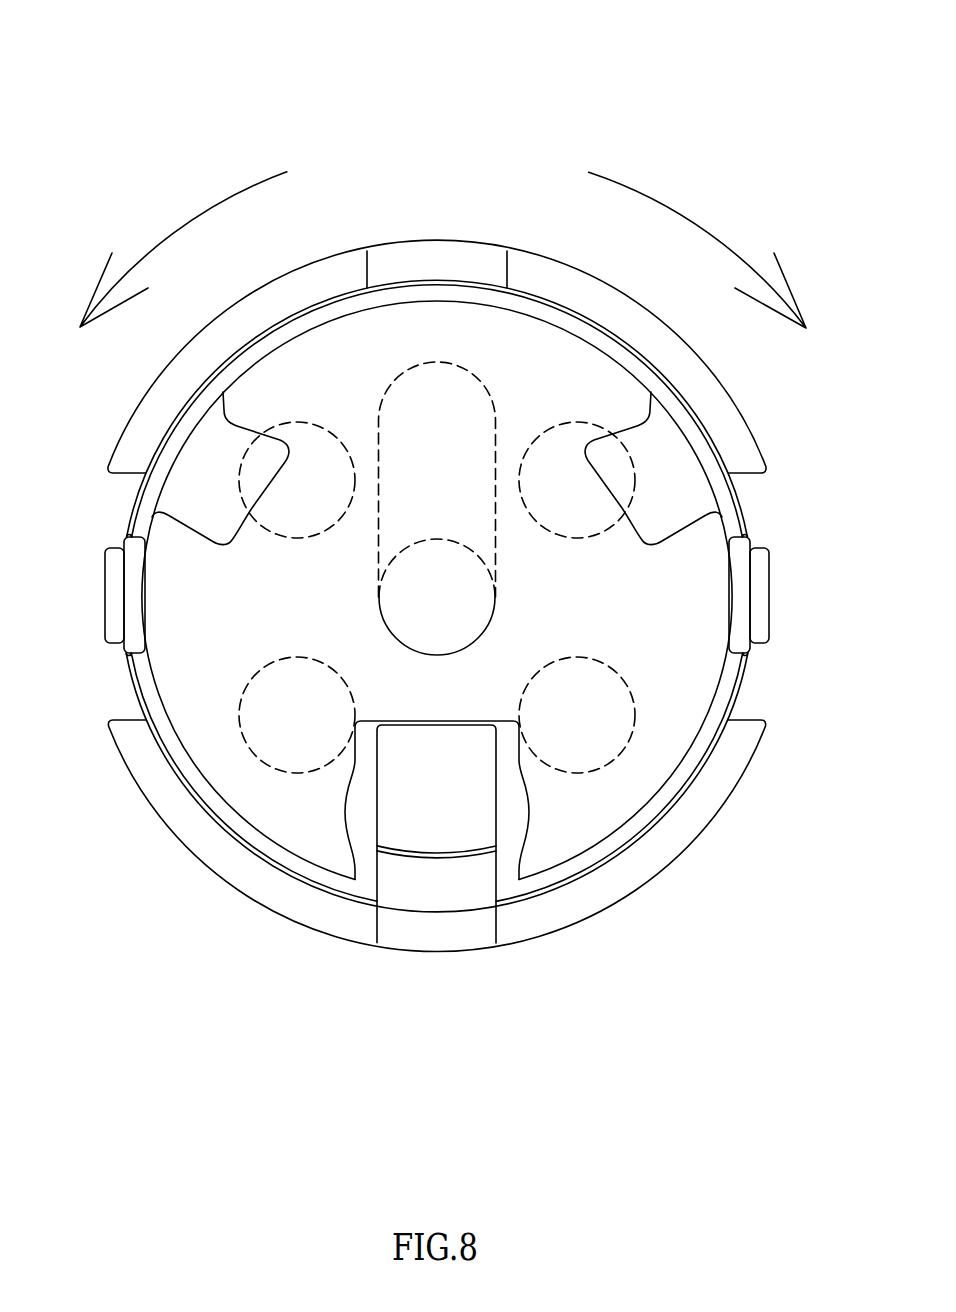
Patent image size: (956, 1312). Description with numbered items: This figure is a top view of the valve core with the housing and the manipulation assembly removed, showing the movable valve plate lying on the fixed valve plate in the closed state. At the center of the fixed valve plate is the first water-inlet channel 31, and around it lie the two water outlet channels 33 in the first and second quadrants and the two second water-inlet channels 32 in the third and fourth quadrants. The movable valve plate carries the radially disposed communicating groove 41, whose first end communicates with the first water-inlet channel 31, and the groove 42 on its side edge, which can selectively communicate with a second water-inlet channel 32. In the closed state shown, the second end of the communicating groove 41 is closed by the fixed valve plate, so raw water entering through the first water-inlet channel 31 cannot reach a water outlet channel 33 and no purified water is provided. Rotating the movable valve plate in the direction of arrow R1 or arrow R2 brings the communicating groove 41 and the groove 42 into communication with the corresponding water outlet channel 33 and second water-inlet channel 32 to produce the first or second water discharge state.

The first water-inlet channel 31 is at (437, 597).
The second water-inlet channel 32 is at (578, 716).
The water outlet channel 33 is at (580, 510).
The communicating groove 41 is at (437, 427).
The groove 42 is at (497, 789).
The arrow R1 is at (677, 214).
The arrow R2 is at (198, 217).